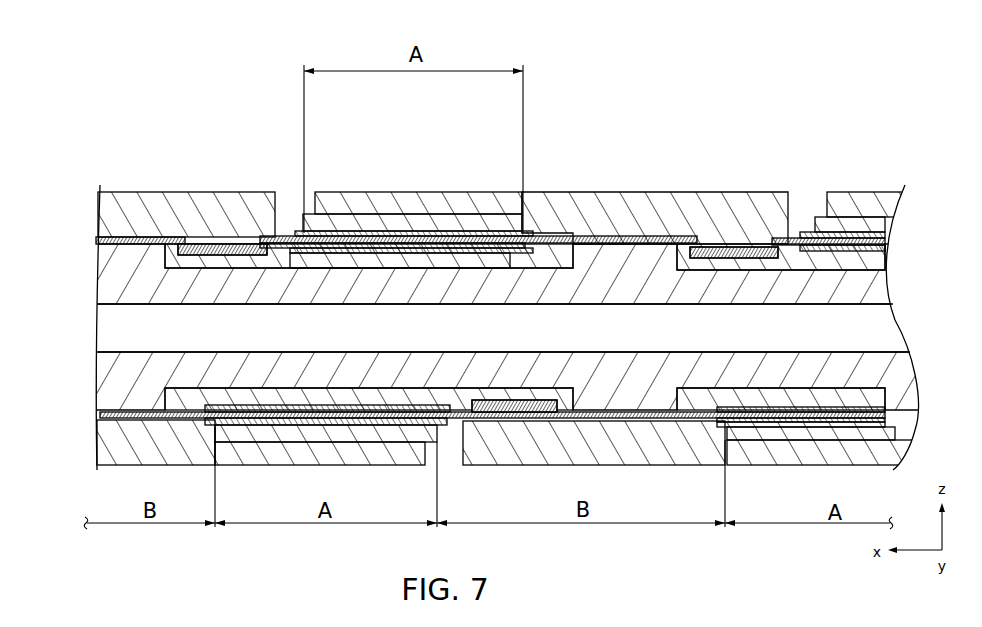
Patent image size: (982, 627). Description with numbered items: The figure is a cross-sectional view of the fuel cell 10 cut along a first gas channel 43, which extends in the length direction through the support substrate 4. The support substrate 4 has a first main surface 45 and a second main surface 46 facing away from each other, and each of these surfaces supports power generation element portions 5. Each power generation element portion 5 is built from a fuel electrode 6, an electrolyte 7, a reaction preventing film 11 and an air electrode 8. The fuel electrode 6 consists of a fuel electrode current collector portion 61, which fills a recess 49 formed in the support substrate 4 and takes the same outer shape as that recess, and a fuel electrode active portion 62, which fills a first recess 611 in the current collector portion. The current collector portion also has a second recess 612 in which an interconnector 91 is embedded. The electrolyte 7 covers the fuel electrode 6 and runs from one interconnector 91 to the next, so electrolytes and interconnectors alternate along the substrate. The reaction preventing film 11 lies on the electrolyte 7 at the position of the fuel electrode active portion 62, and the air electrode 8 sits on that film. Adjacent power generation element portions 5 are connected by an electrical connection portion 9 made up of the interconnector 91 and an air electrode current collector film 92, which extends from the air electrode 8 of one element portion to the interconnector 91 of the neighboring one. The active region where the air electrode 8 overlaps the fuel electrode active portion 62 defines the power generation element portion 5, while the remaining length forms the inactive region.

The support substrate 4 is at (96, 288).
The first gas channel 43 is at (182, 334).
The first main surface 45 is at (100, 218).
The second main surface 46 is at (100, 436).
The electrical connection portion 9 is at (494, 247).
The air electrode current collector film 92 is at (137, 192).
The interconnector 91 is at (460, 191).
The recess 49 is at (545, 268).
The fuel electrode 6 is at (539, 156).
The fuel electrode current collector portion 61 is at (282, 237).
The fuel electrode active portion 62 is at (293, 233).
The first recess 611 is at (508, 213).
The second recess 612 is at (232, 242).
The electrolyte 7 is at (303, 231).
The reaction preventing film 11 is at (385, 222).
The power generation element portion 5 is at (360, 207).
The air electrode 8 is at (425, 200).
The fuel cell 10 is at (632, 75).